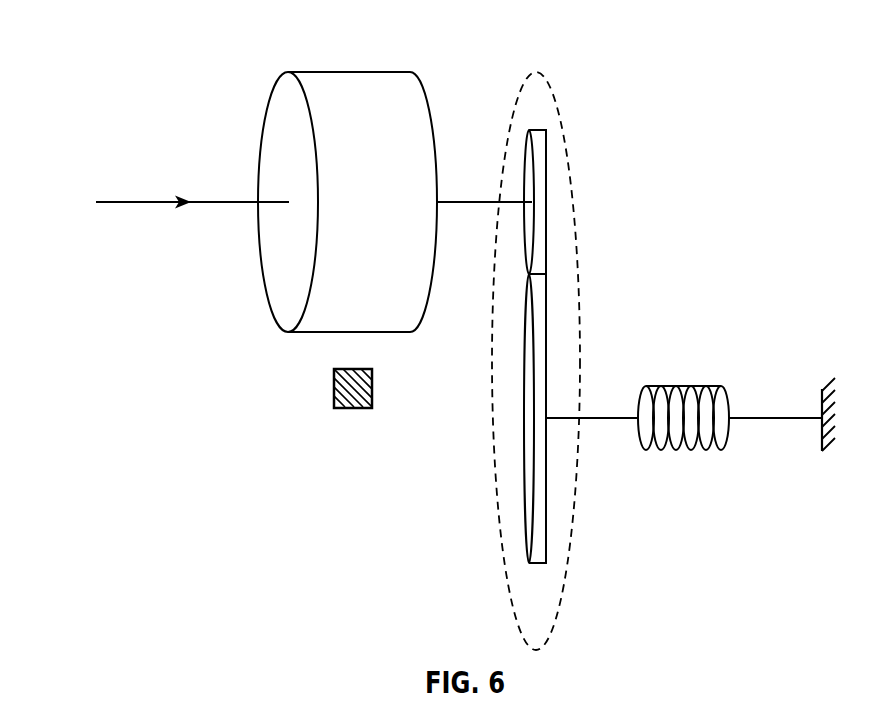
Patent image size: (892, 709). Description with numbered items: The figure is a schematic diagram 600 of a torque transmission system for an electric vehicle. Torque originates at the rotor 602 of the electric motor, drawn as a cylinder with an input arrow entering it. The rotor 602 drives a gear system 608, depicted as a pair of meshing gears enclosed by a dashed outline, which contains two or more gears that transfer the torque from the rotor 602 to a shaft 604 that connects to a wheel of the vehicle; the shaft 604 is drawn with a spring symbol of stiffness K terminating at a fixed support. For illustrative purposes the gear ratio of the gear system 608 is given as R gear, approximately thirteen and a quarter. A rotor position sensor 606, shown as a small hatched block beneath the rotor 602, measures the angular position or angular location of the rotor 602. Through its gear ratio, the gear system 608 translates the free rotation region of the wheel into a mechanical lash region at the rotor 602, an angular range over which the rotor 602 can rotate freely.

The schematic diagram 600 is at (792, 40).
The rotor 602 is at (346, 72).
The shaft 604 is at (722, 387).
The rotor position sensor 606 is at (334, 393).
The gear system 608 is at (542, 72).